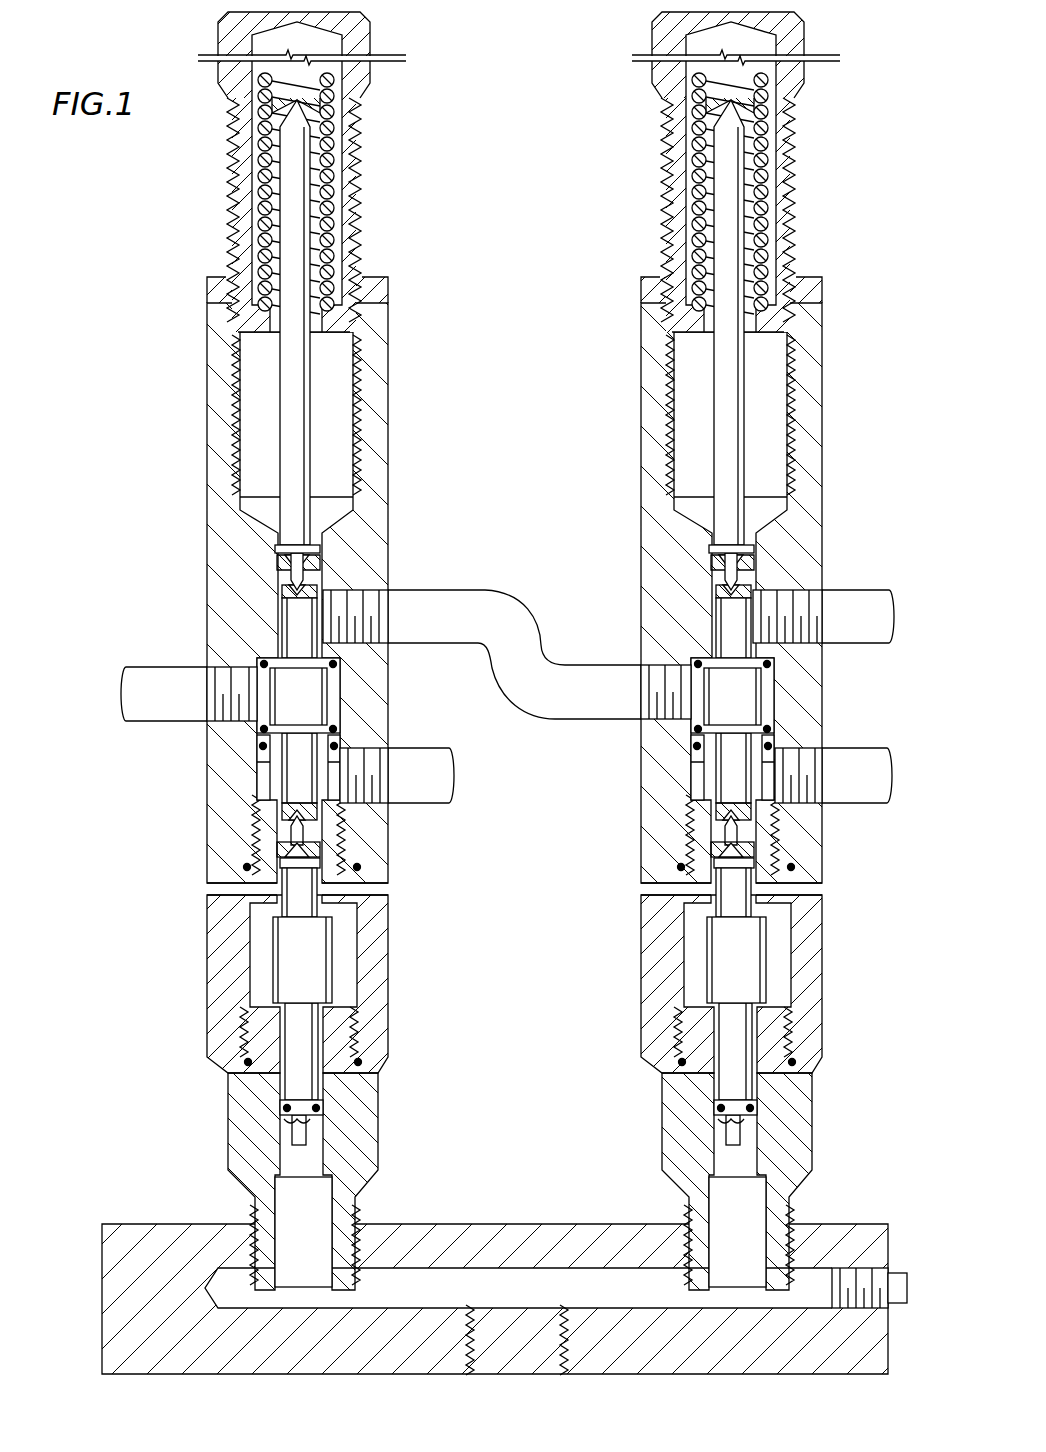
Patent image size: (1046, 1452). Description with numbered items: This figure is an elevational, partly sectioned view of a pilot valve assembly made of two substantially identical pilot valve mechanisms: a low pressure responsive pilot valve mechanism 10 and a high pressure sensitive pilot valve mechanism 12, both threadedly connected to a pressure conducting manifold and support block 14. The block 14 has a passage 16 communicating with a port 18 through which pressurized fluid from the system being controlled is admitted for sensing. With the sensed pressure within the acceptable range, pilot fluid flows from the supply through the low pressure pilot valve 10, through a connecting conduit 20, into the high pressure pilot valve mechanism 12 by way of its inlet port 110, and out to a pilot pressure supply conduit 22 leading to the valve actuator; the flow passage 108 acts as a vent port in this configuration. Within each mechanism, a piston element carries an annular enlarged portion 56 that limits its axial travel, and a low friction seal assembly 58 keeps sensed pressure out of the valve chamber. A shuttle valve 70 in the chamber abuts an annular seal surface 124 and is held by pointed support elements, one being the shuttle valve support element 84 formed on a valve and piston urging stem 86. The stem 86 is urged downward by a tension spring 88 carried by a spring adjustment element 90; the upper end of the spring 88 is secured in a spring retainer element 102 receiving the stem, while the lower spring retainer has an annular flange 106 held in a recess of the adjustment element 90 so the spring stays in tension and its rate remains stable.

The low pressure responsive pilot valve mechanism 10 is at (830, 1023).
The high pressure sensitive pilot valve mechanism 12 is at (204, 976).
The manifold and support block 14 is at (855, 1225).
The passage 16 is at (405, 1272).
The port 18 is at (475, 1356).
The connecting conduit 20 is at (480, 598).
The pilot pressure supply conduit 22 is at (153, 685).
The annular enlarged portion 56 is at (768, 957).
The seal assembly 58 is at (325, 1112).
The shuttle valve 70 is at (770, 690).
The shuttle valve support element 84 is at (770, 557).
The valve and piston urging stem 86 is at (738, 418).
The tension spring 88 is at (765, 208).
The spring adjustment element 90 is at (806, 38).
The spring retainer element 102 is at (684, 97).
The lower annular flange 106 is at (235, 319).
The vent port 108 is at (805, 758).
The inlet port 110 is at (815, 592).
The annular seal surface 124 is at (755, 740).